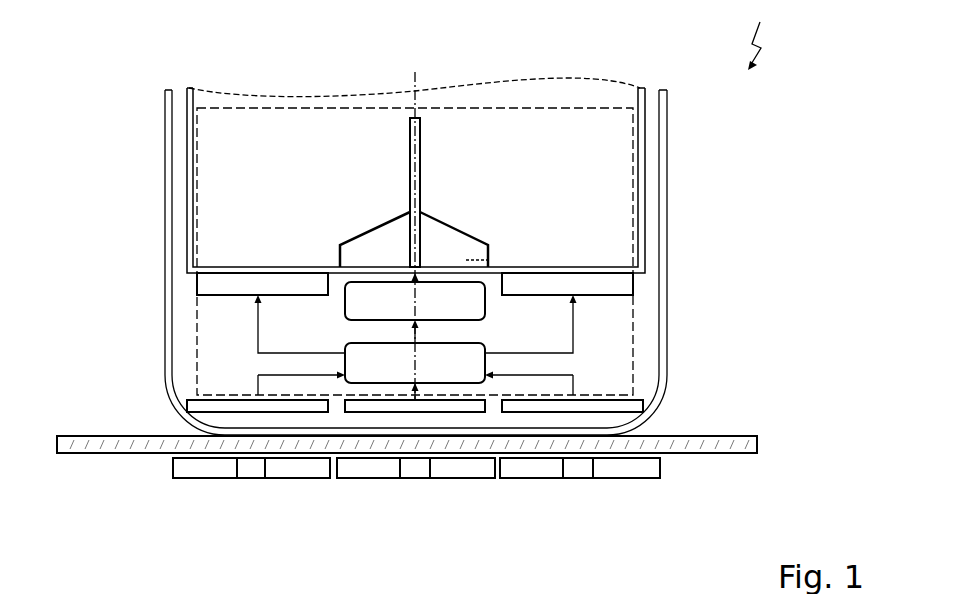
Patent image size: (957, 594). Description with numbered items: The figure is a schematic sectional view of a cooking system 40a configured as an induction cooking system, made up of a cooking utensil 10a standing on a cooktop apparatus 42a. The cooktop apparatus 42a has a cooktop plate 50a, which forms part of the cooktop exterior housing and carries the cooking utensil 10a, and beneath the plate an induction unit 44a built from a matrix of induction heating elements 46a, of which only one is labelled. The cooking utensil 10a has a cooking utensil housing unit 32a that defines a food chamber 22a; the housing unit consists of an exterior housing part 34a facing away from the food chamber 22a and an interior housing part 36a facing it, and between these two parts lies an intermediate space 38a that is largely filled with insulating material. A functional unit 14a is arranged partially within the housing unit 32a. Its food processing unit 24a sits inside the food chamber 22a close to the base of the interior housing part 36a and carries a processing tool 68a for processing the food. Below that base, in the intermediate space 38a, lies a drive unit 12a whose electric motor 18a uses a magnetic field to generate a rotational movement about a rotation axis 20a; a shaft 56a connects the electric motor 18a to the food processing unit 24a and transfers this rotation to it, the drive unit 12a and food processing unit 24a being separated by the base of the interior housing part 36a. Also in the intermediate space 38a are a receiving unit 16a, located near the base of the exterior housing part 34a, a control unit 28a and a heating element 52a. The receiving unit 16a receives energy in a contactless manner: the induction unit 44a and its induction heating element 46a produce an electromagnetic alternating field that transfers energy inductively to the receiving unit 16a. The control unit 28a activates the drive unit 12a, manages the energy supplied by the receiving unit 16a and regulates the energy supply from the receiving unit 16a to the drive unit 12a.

The cooking utensil 10a is at (707, 117).
The drive unit 12a is at (505, 307).
The functional unit 14a is at (300, 98).
The receiving unit 16a is at (662, 398).
The electric motor 18a is at (458, 310).
The rotation axis 20a is at (418, 80).
The food chamber 22a is at (298, 185).
The food processing unit 24a is at (460, 226).
The control unit 28a is at (460, 357).
The cooking utensil housing unit 32a is at (670, 166).
The exterior housing part 34a is at (668, 224).
The interior housing part 36a is at (645, 88).
The intermediate space 38a is at (323, 342).
The cooking system 40a is at (763, 35).
The cooktop apparatus 42a is at (760, 403).
The induction unit 44a is at (176, 466).
The induction heating element 46a is at (205, 463).
The cooktop plate 50a is at (85, 446).
The heating element 52a is at (222, 285).
The shaft 56a is at (414, 267).
The processing tool 68a is at (490, 258).